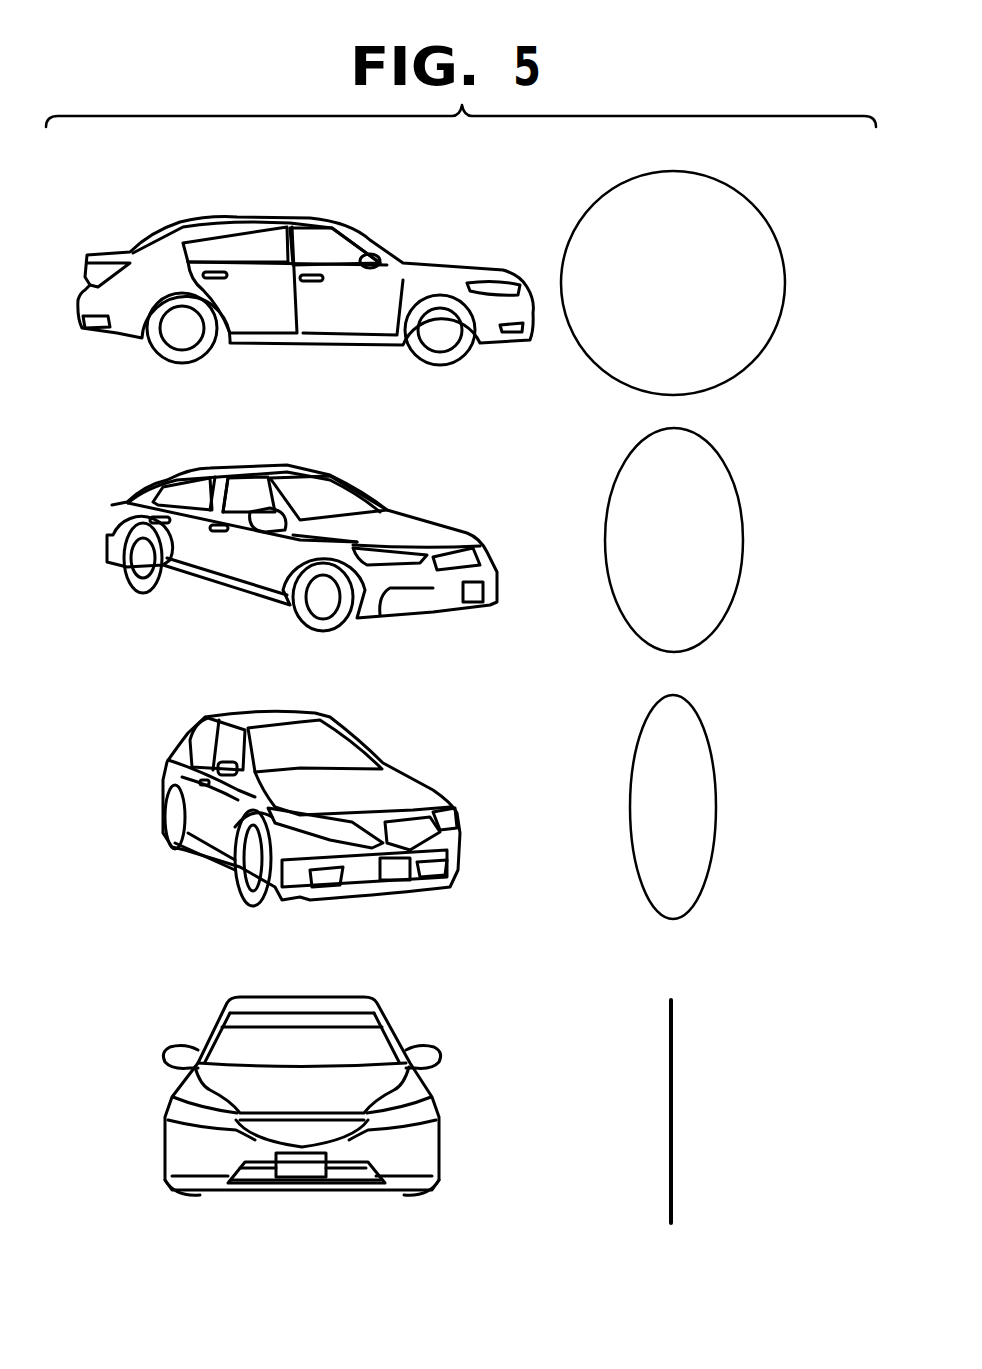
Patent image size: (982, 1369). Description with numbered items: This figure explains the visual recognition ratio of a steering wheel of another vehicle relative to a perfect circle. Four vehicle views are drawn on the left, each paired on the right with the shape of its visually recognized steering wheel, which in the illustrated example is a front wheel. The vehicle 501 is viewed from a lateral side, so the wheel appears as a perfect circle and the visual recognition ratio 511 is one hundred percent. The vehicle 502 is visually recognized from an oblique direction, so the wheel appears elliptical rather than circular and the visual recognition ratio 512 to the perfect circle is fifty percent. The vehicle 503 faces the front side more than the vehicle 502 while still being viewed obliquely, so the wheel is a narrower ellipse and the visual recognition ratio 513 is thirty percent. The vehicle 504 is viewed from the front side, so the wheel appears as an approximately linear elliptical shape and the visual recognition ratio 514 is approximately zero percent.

The vehicle 501 is at (383, 242).
The vehicle 502 is at (383, 500).
The vehicle 503 is at (383, 752).
The vehicle 504 is at (400, 1040).
The visual recognition ratio 511 is at (786, 262).
The visual recognition ratio 512 is at (743, 527).
The visual recognition ratio 513 is at (718, 778).
The visual recognition ratio 514 is at (673, 1192).